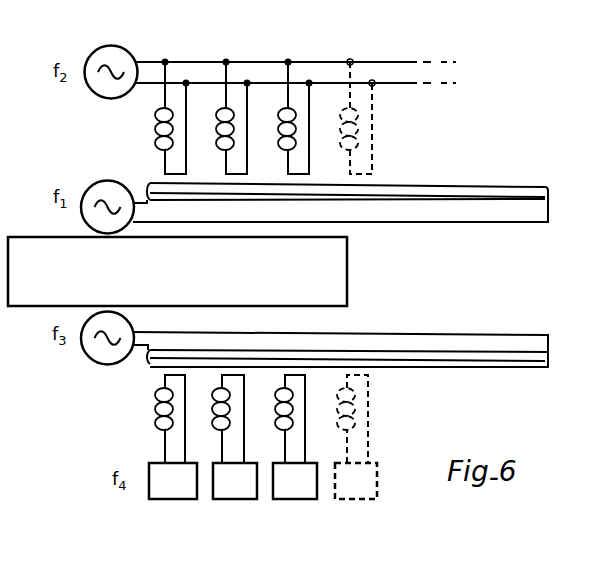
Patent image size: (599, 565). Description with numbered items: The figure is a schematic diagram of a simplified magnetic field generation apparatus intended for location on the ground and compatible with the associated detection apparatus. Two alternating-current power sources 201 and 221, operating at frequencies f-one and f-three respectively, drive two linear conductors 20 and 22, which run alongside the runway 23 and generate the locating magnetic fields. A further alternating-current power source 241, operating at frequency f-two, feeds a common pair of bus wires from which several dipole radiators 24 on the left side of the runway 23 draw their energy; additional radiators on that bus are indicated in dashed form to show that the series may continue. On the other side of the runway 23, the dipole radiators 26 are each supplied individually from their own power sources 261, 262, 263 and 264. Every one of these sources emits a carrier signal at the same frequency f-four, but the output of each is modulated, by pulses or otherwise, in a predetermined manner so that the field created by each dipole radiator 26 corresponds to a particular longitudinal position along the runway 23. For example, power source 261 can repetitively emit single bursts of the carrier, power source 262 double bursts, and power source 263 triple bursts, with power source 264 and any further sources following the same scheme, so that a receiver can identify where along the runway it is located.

The linear conductor 20 is at (507, 186).
The linear conductor 22 is at (505, 368).
The runway 23 is at (347, 283).
The dipole radiators 24 is at (173, 138).
The dipole radiators 26 is at (221, 438).
The alternating-current power source 201 is at (107, 181).
The alternating-current power source 221 is at (108, 365).
The alternating-current power source 241 is at (111, 46).
The power source 261 is at (188, 499).
The power source 262 is at (252, 499).
The power source 263 is at (313, 499).
The power source 264 is at (375, 499).